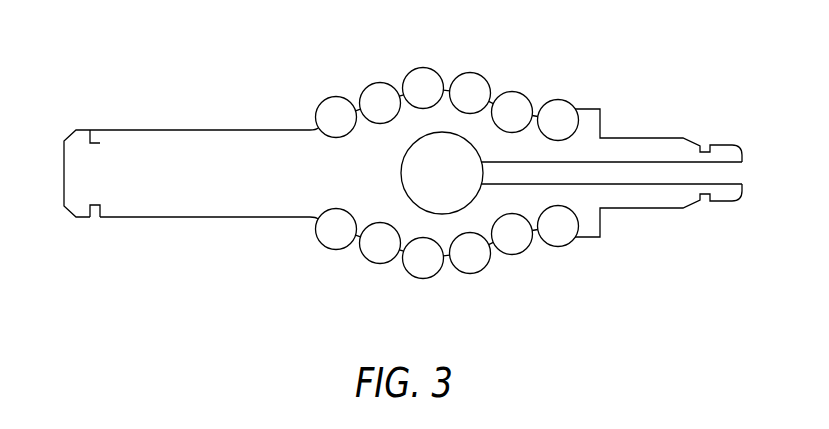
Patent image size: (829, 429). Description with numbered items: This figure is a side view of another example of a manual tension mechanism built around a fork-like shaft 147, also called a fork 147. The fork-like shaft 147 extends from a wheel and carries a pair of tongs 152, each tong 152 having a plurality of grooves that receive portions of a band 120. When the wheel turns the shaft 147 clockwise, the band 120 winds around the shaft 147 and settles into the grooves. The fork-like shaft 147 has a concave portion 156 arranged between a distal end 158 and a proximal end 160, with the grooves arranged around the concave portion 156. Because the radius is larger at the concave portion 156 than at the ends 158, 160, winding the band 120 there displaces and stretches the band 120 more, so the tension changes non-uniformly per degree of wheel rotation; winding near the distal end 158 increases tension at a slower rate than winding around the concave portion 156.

The band 120 is at (480, 272).
The fork-like shaft 147 is at (192, 162).
The tong 152 is at (678, 150).
The concave portion 156 is at (442, 83).
The distal end 158 is at (608, 160).
The proximal end 160 is at (175, 147).